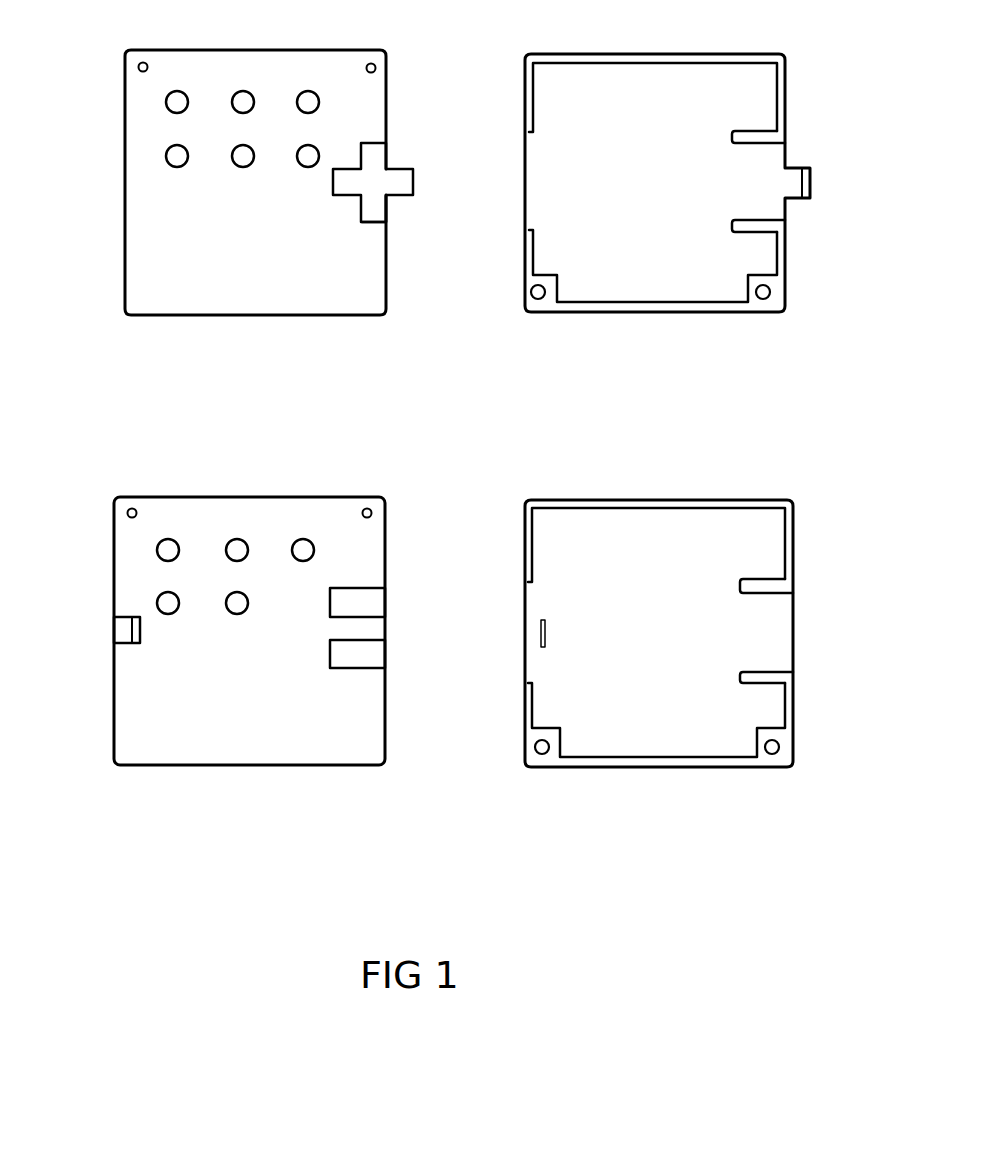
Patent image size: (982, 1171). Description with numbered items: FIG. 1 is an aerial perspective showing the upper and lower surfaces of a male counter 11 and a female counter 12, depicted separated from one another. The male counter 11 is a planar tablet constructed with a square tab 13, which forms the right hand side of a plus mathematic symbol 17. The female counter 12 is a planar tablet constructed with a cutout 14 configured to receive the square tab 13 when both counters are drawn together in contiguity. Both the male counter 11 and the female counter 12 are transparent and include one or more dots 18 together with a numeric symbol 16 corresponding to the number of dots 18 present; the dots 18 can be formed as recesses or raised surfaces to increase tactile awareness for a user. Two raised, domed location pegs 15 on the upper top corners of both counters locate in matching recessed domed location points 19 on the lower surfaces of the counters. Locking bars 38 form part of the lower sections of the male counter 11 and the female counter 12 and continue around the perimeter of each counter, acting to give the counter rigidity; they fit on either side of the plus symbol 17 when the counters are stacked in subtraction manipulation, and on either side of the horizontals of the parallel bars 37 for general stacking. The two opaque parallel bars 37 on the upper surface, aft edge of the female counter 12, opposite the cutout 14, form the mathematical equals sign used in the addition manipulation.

The male counter 11 is at (392, 69).
The female counter 12 is at (391, 528).
The square tab 13 is at (417, 182).
The cutout 14 is at (127, 628).
The domed location pegs 15 is at (150, 63).
The numeric symbol 16 is at (137, 267).
The plus mathematic symbol 17 is at (386, 226).
The dots 18 is at (251, 90).
The recessed domed location point 19 is at (546, 298).
The parallel bars 37 is at (383, 609).
The locking bars 38 is at (770, 216).